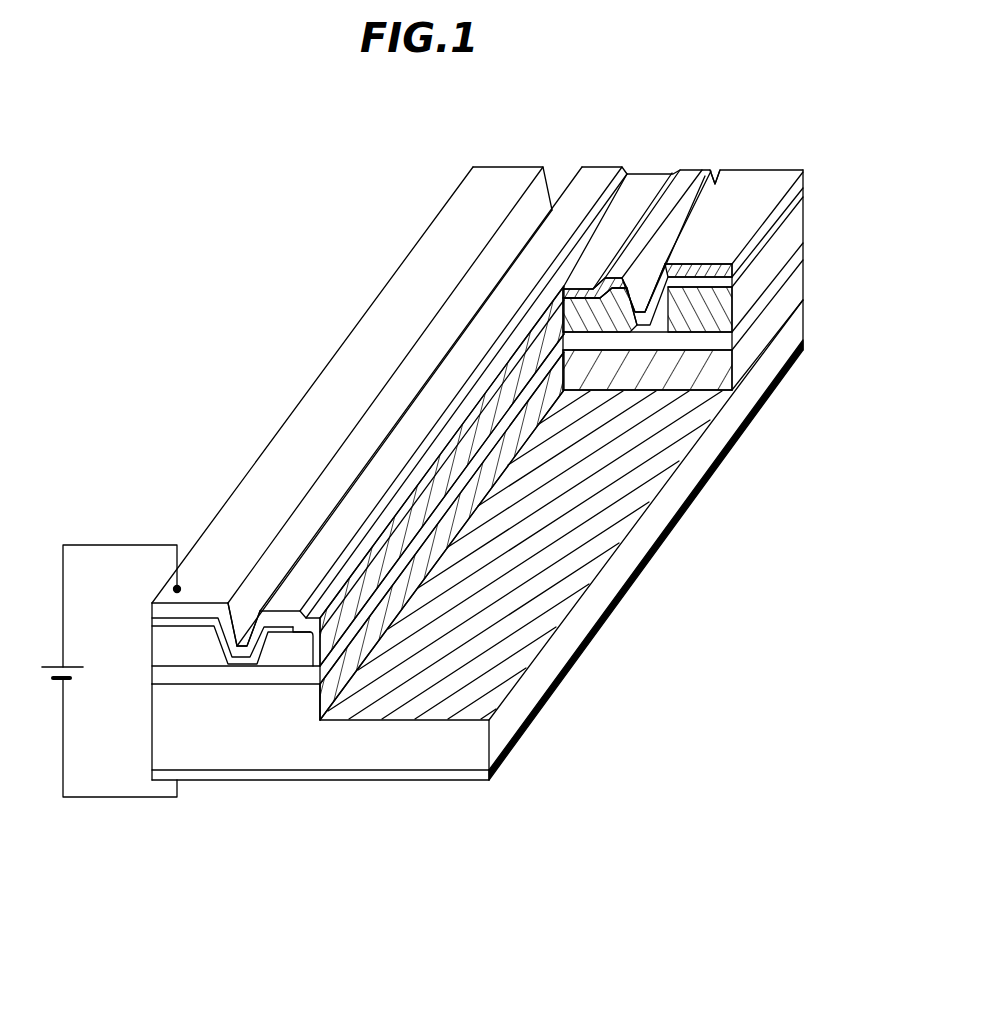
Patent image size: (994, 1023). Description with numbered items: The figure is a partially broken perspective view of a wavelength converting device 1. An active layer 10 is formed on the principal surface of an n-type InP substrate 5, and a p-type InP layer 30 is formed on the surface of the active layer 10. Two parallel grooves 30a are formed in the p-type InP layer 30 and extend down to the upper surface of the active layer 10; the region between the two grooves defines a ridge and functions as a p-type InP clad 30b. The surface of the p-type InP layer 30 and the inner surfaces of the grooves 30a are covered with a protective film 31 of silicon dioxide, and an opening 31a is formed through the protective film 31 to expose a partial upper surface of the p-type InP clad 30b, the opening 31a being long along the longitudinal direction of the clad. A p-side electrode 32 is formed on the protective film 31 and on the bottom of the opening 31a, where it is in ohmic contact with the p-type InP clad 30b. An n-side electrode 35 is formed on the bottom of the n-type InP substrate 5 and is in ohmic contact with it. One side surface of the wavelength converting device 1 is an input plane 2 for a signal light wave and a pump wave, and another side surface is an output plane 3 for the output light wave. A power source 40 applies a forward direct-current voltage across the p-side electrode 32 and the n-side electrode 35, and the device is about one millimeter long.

The wavelength converting device 1 is at (249, 229).
The input plane 2 is at (399, 742).
The output plane 3 is at (812, 272).
The n-type InP substrate 5 is at (157, 738).
The active layer 10 is at (153, 675).
The p-type InP layer 30 is at (153, 651).
The groove 30a is at (230, 640).
The p-type InP clad 30b is at (277, 657).
The protective film 31 is at (152, 620).
The opening 31a is at (303, 630).
The p-side electrode 32 is at (152, 605).
The n-side electrode 35 is at (200, 775).
The power source 40 is at (43, 670).